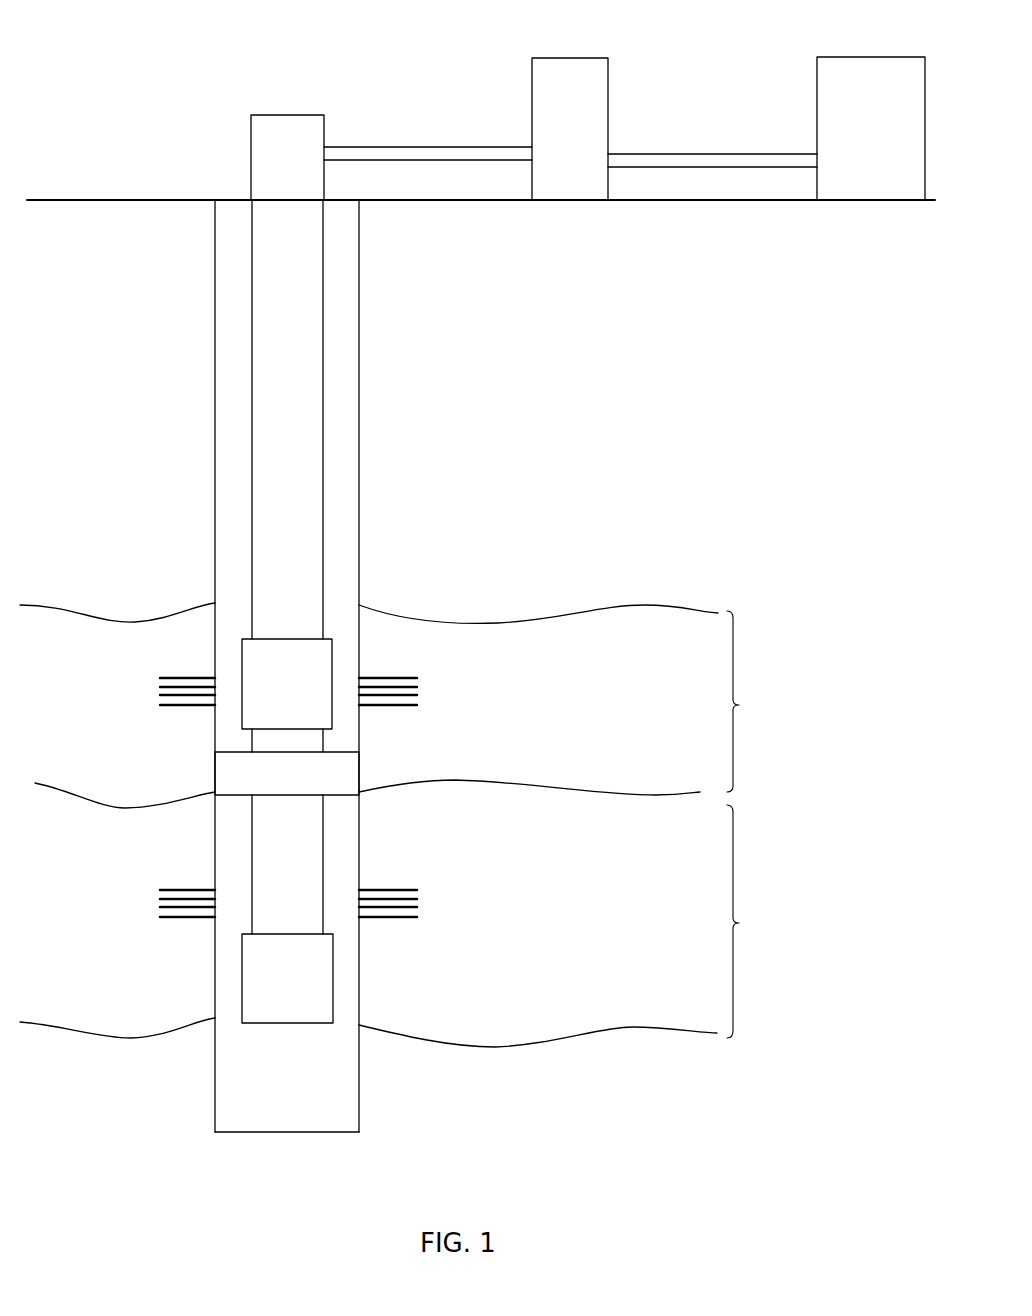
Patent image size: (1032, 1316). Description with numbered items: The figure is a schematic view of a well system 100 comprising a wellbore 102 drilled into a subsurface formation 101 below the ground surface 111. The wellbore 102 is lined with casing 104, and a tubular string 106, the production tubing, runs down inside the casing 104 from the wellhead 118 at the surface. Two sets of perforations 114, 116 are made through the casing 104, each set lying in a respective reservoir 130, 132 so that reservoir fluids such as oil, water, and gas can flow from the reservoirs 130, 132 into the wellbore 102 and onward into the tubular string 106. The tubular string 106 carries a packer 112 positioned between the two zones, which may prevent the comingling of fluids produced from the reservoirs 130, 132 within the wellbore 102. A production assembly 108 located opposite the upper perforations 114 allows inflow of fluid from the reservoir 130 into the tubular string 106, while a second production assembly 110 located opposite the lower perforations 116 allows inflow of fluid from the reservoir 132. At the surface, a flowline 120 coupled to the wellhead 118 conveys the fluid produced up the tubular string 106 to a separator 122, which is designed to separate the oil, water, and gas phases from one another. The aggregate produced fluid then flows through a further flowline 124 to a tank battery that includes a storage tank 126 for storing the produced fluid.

The well system 100 is at (150, 72).
The subsurface formation 101 is at (611, 299).
The wellbore 102 is at (340, 290).
The casing 104 is at (359, 383).
The tubular string 106 is at (323, 468).
The production assembly 108 is at (332, 648).
The production assembly 110 is at (333, 1024).
The surface 111 is at (145, 198).
The packer 112 is at (359, 768).
The perforations 114 is at (160, 705).
The perforations 116 is at (160, 890).
The wellhead 118 is at (306, 164).
The flowline 120 is at (413, 147).
The separator 122 is at (589, 126).
The flowline 124 is at (737, 154).
The storage tank 126 is at (891, 139).
The reservoir 130 is at (753, 701).
The reservoir 132 is at (760, 921).